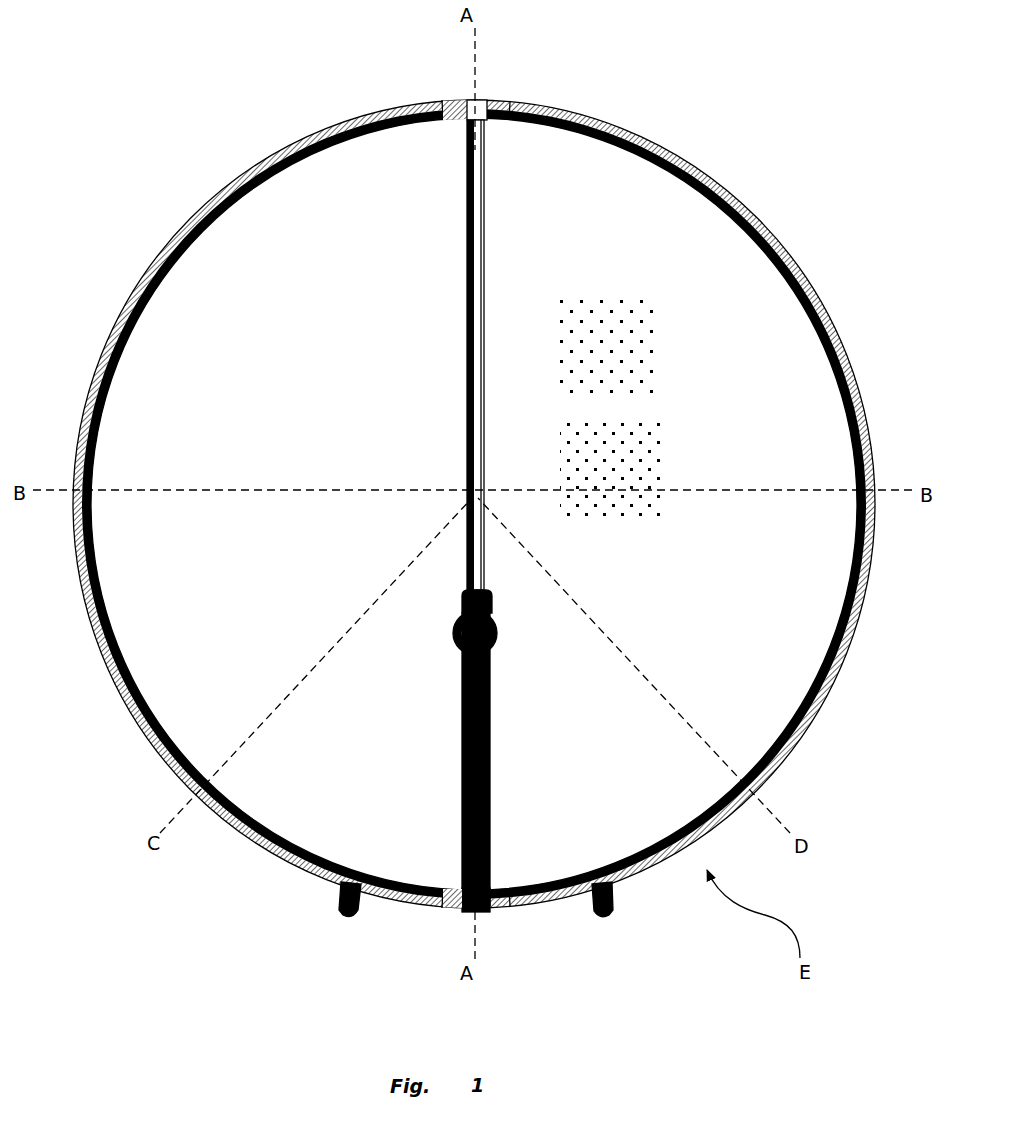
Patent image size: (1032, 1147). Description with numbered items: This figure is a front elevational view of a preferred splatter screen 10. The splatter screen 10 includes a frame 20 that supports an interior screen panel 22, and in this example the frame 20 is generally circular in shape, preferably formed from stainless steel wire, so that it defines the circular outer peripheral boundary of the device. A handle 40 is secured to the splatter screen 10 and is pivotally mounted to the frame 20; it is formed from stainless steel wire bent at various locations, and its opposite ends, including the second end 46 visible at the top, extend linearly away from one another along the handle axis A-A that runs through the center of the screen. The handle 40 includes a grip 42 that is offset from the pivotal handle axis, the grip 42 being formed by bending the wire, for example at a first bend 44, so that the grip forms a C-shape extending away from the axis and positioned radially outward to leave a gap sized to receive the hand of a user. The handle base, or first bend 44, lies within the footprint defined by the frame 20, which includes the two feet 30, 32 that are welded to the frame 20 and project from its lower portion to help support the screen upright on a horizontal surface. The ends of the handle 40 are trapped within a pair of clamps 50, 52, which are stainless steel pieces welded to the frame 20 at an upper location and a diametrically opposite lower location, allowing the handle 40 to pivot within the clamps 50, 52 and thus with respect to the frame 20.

The splatter screen 10 is at (721, 105).
The frame 20 is at (743, 213).
The interior screen panel 22 is at (280, 275).
The foot 30 is at (614, 903).
The foot 32 is at (347, 918).
The handle 40 is at (452, 447).
The grip 42 is at (465, 772).
The first bend 44 is at (477, 908).
The second end 46 is at (477, 100).
The clamp 50 is at (453, 100).
The clamp 52 is at (453, 908).